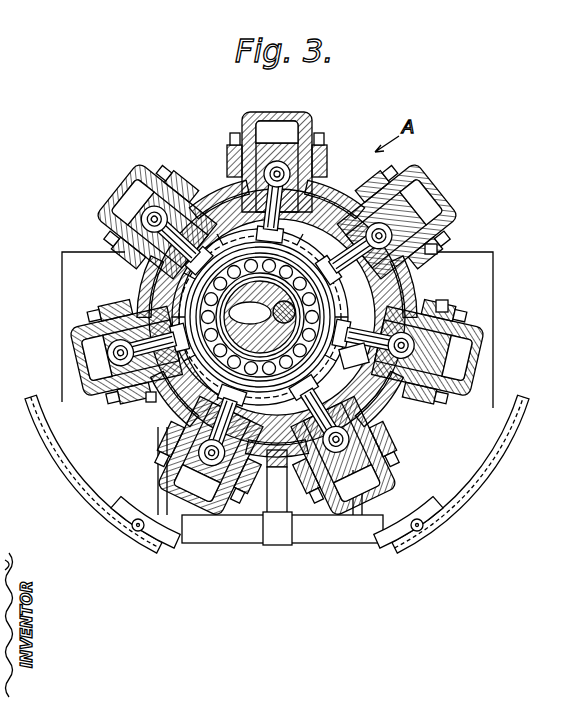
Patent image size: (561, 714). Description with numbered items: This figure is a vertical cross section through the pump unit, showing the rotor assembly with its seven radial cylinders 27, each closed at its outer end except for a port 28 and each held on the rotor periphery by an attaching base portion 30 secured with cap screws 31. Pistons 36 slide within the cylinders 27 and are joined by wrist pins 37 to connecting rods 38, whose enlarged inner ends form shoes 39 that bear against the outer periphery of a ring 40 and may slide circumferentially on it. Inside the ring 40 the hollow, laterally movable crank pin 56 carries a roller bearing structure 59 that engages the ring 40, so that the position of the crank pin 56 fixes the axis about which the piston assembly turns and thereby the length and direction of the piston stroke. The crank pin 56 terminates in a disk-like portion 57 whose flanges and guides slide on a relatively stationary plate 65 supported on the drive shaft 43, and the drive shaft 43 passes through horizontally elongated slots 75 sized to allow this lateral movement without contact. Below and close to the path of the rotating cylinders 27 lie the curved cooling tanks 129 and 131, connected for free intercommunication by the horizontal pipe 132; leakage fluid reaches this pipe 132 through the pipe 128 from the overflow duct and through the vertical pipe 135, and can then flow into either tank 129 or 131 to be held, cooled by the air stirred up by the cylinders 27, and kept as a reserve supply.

The radial cylinders 27 is at (312, 114).
The ports 28 is at (138, 185).
The attaching base portions 30 is at (330, 179).
The cap screws 31 is at (350, 195).
The pistons 36 is at (268, 196).
The wrist pins 37 is at (284, 177).
The connecting rods 38 is at (228, 192).
The shoes 39 is at (148, 284).
The ring 40 is at (440, 308).
The drive shaft 43 is at (152, 398).
The crank pin 56 is at (423, 185).
The disk-like portion 57 is at (262, 462).
The roller bearing structure 59 is at (332, 387).
The stationary plate 65 is at (430, 250).
The slots 75 is at (260, 317).
The pipe 128 is at (118, 522).
The cooling tank 129 is at (98, 477).
The cooling tank 131 is at (490, 458).
The pipe 132 is at (347, 533).
The vertical pipe 135 is at (277, 498).